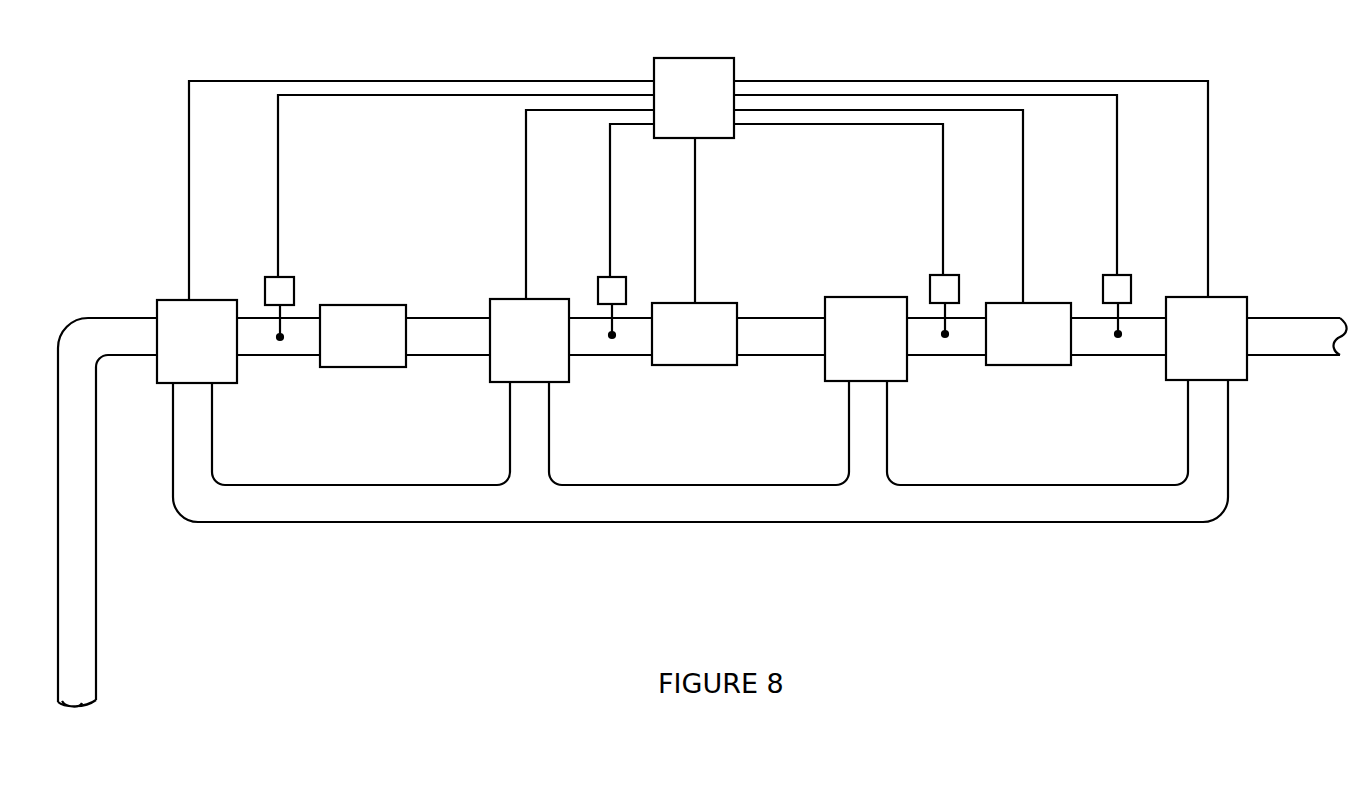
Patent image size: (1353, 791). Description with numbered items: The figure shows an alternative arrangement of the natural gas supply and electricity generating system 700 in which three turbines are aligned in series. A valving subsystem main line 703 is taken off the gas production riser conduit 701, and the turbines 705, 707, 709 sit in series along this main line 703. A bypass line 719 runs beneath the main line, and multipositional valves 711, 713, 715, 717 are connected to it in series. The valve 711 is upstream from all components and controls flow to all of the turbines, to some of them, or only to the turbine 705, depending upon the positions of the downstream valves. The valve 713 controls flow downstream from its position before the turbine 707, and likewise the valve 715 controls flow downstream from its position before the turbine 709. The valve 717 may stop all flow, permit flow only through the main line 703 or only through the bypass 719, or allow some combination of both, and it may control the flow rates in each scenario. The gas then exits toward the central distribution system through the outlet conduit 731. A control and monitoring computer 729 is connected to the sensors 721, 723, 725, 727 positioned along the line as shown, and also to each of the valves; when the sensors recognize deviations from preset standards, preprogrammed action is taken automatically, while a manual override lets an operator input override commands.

The natural gas supply and electricity generating system 700 is at (390, 562).
The gas production riser conduit 701 is at (98, 618).
The valving subsystem main line 703 is at (445, 335).
The turbine 705 is at (388, 305).
The turbine 707 is at (725, 303).
The turbine 709 is at (1052, 303).
The valve 711 is at (237, 374).
The valve 713 is at (569, 374).
The valve 715 is at (907, 372).
The valve 717 is at (1247, 372).
The bypass line 719 is at (703, 521).
The sensor 721 is at (288, 276).
The sensor 723 is at (604, 276).
The sensor 725 is at (938, 275).
The sensor 727 is at (1125, 275).
The control and monitoring computer 729 is at (734, 58).
The outlet conduit 731 is at (1283, 318).